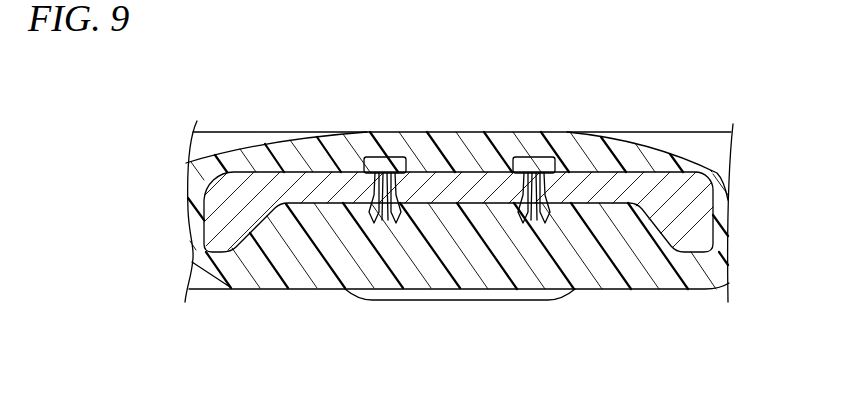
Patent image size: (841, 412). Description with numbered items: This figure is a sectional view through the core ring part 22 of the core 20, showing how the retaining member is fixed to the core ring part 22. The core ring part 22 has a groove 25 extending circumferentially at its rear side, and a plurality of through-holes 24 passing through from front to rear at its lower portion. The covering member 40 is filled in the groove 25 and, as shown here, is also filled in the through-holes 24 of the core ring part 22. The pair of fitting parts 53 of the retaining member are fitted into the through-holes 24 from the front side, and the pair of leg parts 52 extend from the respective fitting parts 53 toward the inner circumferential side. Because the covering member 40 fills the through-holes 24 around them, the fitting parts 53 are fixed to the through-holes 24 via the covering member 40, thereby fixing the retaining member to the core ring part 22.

The core 20 is at (193, 253).
The core ring part 22 is at (189, 208).
The through-holes 24 is at (394, 289).
The groove 25 is at (306, 286).
The covering member 40 is at (661, 132).
The leg parts 52 is at (387, 156).
The fitting parts 53 is at (364, 216).